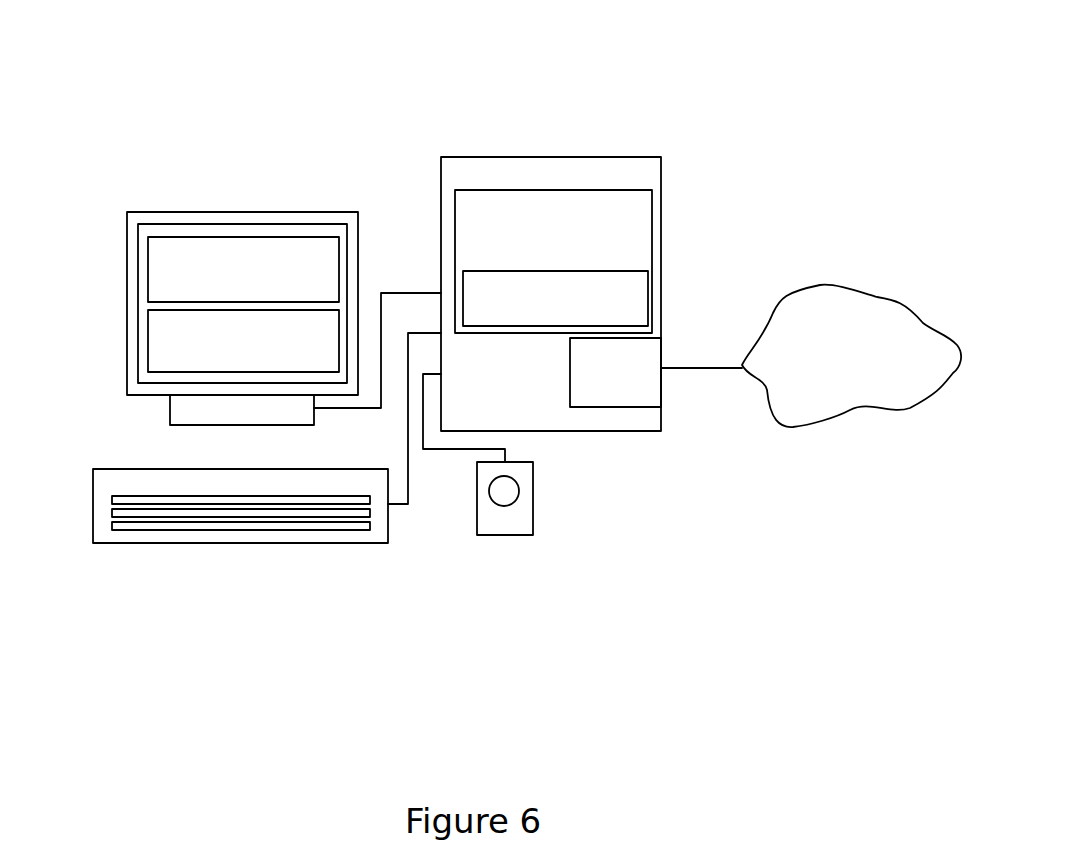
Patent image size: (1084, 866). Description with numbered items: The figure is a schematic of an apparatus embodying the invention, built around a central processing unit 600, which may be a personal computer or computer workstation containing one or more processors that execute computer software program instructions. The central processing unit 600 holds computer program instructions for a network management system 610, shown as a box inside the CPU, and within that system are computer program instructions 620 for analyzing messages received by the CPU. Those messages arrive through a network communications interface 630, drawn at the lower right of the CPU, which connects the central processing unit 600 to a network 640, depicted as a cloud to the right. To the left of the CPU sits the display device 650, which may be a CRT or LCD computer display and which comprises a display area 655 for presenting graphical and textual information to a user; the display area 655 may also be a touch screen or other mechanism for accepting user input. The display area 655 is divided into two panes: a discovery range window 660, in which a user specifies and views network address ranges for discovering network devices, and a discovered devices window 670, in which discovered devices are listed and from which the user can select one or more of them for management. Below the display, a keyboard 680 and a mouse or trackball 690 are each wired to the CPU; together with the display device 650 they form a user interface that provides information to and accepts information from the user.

The central processing unit 600 is at (457, 157).
The network management system 610 is at (585, 188).
The computer program instructions for analyzing messages 620 is at (603, 273).
The network communications interface 630 is at (628, 402).
The network 640 is at (832, 282).
The display device 650 is at (140, 210).
The display area 655 is at (192, 226).
The discovery range window 660 is at (224, 256).
The discovered devices window 670 is at (158, 332).
The keyboard 680 is at (217, 535).
The mouse or trackball 690 is at (500, 530).